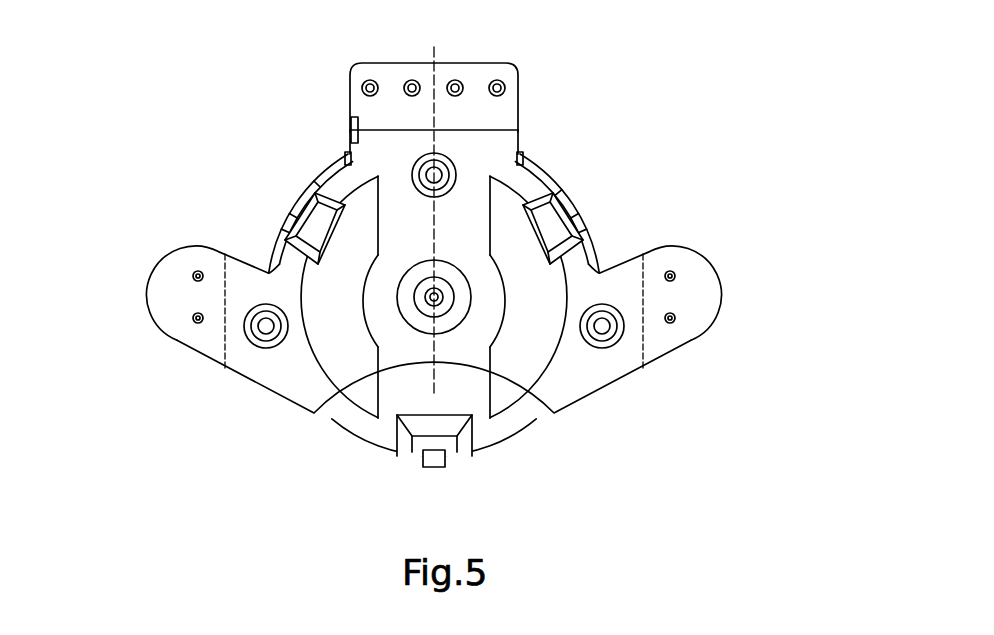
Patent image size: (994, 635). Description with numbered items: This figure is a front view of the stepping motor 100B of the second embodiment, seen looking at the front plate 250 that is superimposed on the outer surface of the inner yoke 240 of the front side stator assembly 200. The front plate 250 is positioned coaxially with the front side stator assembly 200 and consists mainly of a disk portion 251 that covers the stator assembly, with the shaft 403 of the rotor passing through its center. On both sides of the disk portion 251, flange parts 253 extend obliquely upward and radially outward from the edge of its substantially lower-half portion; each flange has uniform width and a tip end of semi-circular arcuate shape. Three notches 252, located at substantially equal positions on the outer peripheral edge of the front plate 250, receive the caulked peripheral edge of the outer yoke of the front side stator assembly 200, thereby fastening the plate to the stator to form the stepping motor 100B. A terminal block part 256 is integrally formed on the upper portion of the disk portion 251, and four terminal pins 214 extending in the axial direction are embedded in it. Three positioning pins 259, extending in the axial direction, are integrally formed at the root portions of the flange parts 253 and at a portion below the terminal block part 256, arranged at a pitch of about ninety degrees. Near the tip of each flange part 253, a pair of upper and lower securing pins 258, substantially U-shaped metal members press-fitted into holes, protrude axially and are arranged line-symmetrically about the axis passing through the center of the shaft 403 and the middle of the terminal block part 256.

The stepping motor 100B is at (240, 83).
The front side stator assembly 200 is at (312, 182).
The terminal pins 214 is at (413, 80).
The inner yoke 240 is at (538, 170).
The front plate 250 is at (279, 394).
The disk portion 251 is at (528, 368).
The notches 252 is at (577, 212).
The flange parts 253 is at (680, 250).
The terminal block part 256 is at (519, 102).
The securing pins 258 is at (677, 320).
The positioning pins 259 is at (417, 168).
The shaft 403 is at (423, 306).